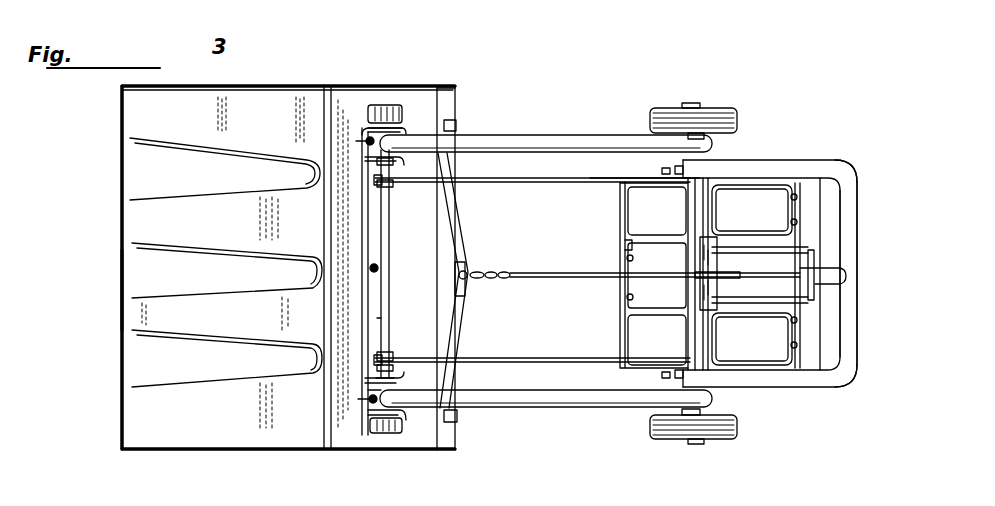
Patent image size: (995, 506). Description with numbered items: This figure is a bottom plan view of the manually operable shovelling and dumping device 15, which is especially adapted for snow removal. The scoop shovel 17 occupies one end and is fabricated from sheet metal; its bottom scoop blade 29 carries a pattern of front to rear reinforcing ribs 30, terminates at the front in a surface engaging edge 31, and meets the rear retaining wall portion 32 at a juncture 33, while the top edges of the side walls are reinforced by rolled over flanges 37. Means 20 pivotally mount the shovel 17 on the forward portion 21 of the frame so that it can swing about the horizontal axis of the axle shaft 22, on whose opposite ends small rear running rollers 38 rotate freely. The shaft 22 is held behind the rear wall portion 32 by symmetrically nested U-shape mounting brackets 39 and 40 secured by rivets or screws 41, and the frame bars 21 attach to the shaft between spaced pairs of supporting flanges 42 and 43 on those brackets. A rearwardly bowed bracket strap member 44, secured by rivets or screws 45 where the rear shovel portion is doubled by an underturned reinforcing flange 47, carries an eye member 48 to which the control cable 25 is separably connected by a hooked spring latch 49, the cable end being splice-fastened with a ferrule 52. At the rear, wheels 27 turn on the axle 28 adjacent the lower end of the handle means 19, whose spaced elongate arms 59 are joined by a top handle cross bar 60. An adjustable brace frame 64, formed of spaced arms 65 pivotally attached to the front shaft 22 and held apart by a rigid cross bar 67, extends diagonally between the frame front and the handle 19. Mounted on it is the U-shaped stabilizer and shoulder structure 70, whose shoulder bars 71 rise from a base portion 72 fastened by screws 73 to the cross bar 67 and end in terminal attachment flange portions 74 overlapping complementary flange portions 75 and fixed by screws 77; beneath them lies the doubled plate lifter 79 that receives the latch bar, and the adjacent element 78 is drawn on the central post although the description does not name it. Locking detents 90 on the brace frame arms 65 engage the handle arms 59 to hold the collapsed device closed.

The shovelling and dumping device 15 is at (828, 127).
The scoop shovel 17 is at (132, 290).
The handle means 19 is at (852, 393).
The pivotal mounting means 20 is at (361, 118).
The forward portion of the frame 21 is at (581, 143).
The axle shaft 22 is at (381, 236).
The control cable 25 is at (572, 296).
The wheels 27 is at (738, 119).
The rear axle 28 is at (688, 210).
The scoop blade 29 is at (140, 217).
The reinforcing ribs 30 is at (254, 193).
The surface engaging edge 31 is at (124, 266).
The rear retaining wall portion 32 is at (422, 103).
The juncture 33 is at (326, 214).
The rolled over flanges 37 is at (320, 70).
The rear running rollers 38 is at (403, 108).
The U-shape mounting bracket 39 is at (368, 390).
The U-shape mounting bracket 40 is at (377, 318).
The rivets or screws 41 is at (366, 140).
The supporting flanges 42 is at (403, 128).
The supporting flanges 43 is at (400, 166).
The bracket strap member 44 is at (463, 236).
The rivets or screws 45 is at (456, 127).
The underturned reinforcing flange 47 is at (446, 101).
The eye member 48 is at (471, 274).
The hooked spring latch 49 is at (488, 273).
The ferrule 52 is at (508, 272).
The handle arms 59 is at (773, 162).
The top handle cross bar 60 is at (847, 235).
The adjustable brace frame 64 is at (600, 172).
The brace frame arms 65 is at (496, 182).
The rigid cross bar 67 is at (621, 207).
The stabilizer and shoulder structure 70 is at (671, 322).
The shoulder bars 71 is at (749, 219).
The base portion 72 is at (625, 245).
The screws 73 is at (622, 298).
The terminal attachment flange portions 74 is at (797, 278).
The attachment terminal flange portions 75 is at (780, 207).
The screws 77 is at (795, 202).
The slide block 78 is at (705, 234).
The lifter 79 is at (700, 257).
The locking detents 90 is at (664, 166).